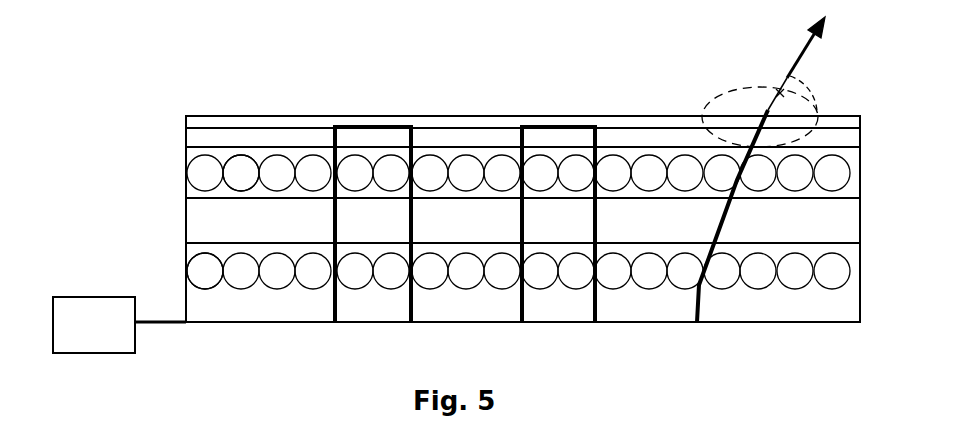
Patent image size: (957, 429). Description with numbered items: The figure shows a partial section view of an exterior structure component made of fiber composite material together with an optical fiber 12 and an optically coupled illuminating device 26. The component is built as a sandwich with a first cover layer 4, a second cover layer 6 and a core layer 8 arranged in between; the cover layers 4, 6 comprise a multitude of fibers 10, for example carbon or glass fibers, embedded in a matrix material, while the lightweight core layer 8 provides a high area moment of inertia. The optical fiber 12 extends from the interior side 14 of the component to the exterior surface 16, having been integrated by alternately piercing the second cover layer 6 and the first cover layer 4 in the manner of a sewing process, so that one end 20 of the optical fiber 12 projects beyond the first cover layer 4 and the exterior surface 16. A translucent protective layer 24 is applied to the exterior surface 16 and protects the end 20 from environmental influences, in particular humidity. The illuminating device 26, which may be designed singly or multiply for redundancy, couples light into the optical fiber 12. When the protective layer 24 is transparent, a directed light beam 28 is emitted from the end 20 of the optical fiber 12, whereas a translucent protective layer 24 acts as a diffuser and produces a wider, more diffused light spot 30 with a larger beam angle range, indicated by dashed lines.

The first cover layer 4 is at (170, 169).
The second cover layer 6 is at (173, 271).
The core layer 8 is at (193, 223).
The fibers 10 is at (243, 163).
The optical fiber 12 is at (332, 218).
The interior side 14 is at (361, 337).
The exterior surface 16 is at (623, 118).
The end 20 is at (752, 102).
The protective layer 24 is at (208, 122).
The illuminating device 26 is at (110, 348).
The directed light beam 28 is at (803, 43).
The light spot 30 is at (807, 103).